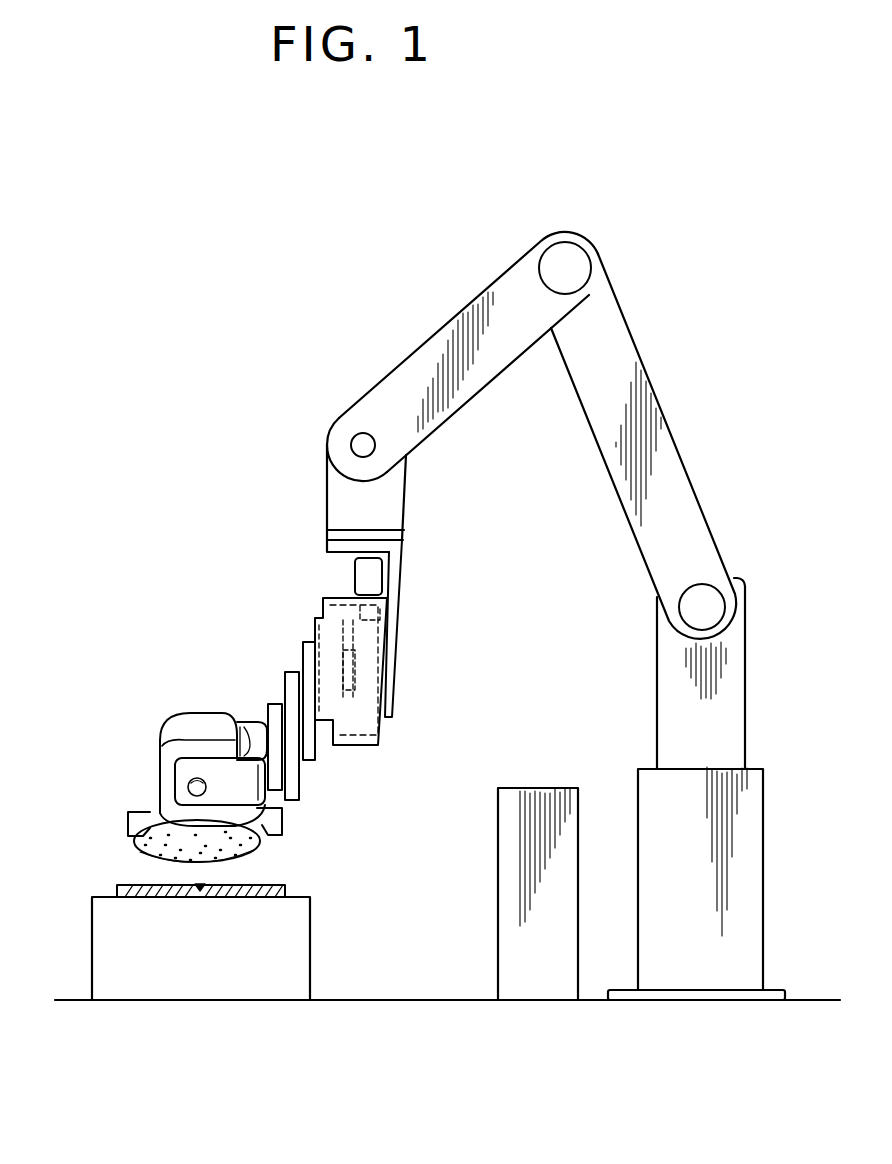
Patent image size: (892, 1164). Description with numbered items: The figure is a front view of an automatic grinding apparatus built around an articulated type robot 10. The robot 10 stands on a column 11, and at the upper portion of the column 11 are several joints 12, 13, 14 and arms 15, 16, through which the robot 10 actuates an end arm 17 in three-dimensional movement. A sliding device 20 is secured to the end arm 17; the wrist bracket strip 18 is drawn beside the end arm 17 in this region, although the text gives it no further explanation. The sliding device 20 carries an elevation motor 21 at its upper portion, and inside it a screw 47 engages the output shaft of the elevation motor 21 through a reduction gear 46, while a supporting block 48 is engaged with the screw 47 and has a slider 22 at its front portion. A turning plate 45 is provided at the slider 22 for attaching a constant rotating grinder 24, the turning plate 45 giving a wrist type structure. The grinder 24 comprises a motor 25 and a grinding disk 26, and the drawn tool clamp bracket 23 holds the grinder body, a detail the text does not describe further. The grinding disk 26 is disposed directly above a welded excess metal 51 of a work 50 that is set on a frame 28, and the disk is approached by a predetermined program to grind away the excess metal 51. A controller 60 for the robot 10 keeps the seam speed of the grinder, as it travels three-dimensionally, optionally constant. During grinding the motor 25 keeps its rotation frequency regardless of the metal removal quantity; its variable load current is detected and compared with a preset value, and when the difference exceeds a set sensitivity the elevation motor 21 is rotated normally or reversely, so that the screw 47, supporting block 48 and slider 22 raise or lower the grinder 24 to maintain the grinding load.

The articulated type robot 10 is at (675, 428).
The column 11 is at (725, 717).
The joint 12 is at (710, 608).
The joint 13 is at (578, 272).
The joint 14 is at (363, 442).
The arm 15 is at (648, 553).
The arm 16 is at (486, 360).
The end arm 17 is at (389, 502).
The wrist bracket strip 18 is at (405, 576).
The sliding device 20 is at (385, 743).
The elevation motor 21 is at (364, 571).
The slider 22 is at (307, 652).
The tool clamp bracket 23 is at (176, 786).
The constant rotating grinder 24 is at (160, 740).
The motor 25 is at (207, 723).
The grinding disk 26 is at (262, 840).
The frame 28 is at (107, 927).
The turning plate 45 is at (278, 704).
The reduction gear 46 is at (378, 609).
The screw 47 is at (353, 646).
The supporting block 48 is at (350, 677).
The work 50 is at (148, 884).
The welded excess metal 51 is at (200, 884).
The controller 60 is at (525, 790).